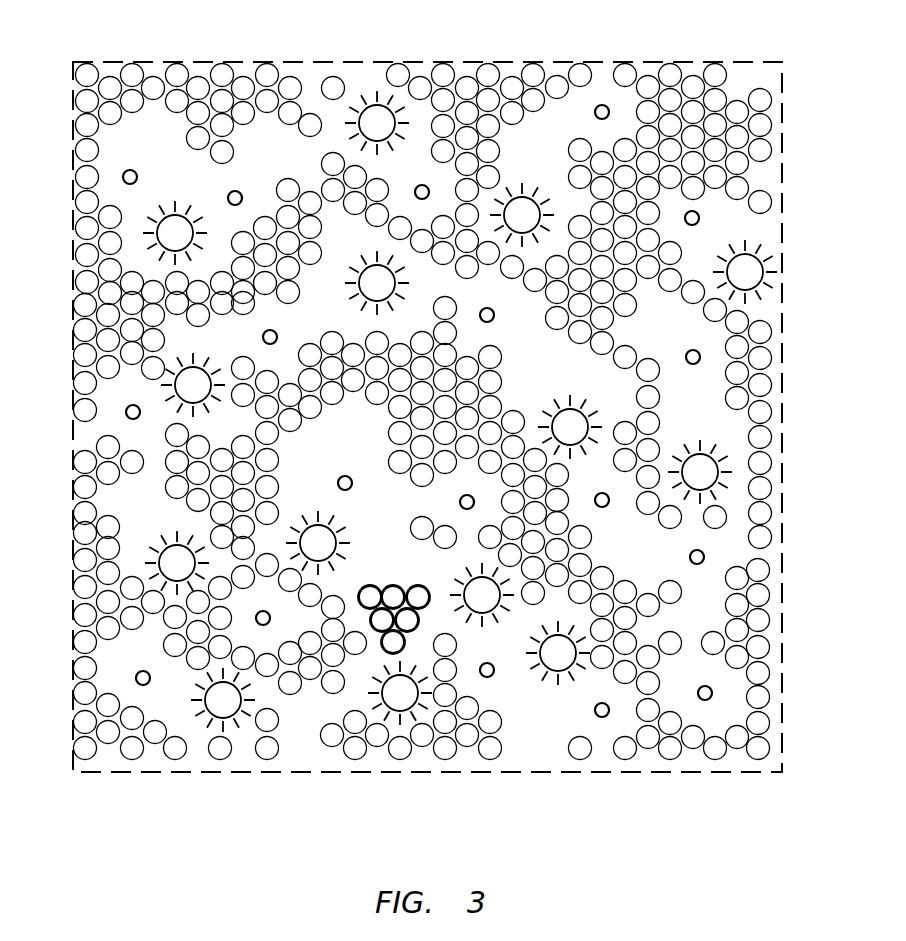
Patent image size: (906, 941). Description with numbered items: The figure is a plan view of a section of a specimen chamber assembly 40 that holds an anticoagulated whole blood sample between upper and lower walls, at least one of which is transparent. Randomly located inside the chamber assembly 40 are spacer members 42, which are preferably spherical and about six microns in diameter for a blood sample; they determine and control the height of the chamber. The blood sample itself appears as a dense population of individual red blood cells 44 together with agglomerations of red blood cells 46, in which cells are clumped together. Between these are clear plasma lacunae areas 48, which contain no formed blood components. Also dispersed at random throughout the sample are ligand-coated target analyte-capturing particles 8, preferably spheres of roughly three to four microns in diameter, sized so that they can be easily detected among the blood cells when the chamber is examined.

The specimen chamber assembly 40 is at (226, 40).
The spacer members 42 is at (602, 104).
The individual red blood cells 44 is at (580, 172).
The agglomerations of red blood cells 46 is at (514, 392).
The clear plasma lacunae areas 48 is at (551, 761).
The ligand-coated target analyte-capturing particles 8 is at (488, 605).